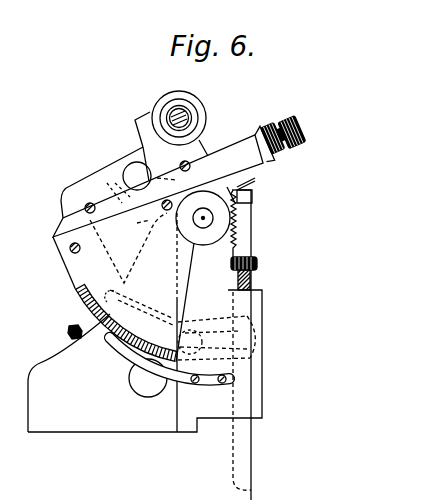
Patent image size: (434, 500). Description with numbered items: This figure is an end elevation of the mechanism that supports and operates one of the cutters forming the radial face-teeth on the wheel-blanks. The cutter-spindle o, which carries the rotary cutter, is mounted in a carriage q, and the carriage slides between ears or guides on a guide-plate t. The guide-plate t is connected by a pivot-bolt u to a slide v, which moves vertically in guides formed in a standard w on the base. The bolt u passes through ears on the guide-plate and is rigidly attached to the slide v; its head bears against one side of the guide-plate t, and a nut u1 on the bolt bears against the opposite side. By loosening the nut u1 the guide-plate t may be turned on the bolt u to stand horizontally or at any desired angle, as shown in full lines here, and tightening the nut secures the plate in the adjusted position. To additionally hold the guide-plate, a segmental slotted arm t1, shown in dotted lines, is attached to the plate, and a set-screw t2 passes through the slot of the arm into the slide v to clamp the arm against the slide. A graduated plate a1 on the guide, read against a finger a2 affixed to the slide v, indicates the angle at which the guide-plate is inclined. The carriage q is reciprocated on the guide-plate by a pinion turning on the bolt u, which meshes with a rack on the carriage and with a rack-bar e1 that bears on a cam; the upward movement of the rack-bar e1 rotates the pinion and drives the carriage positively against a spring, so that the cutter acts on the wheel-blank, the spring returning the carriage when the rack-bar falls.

The cutter-spindle o is at (188, 108).
The guide-plate t is at (232, 155).
The set-screw t2 is at (237, 186).
The segmental slotted arm t1 is at (250, 355).
The pivot-bolt u is at (205, 213).
The nut u1 is at (223, 223).
The rack-bar e1 is at (242, 238).
The carriage q is at (106, 182).
The slide v is at (132, 281).
The graduated plate a1 is at (116, 322).
The finger a2 is at (163, 365).
The standard w is at (145, 322).